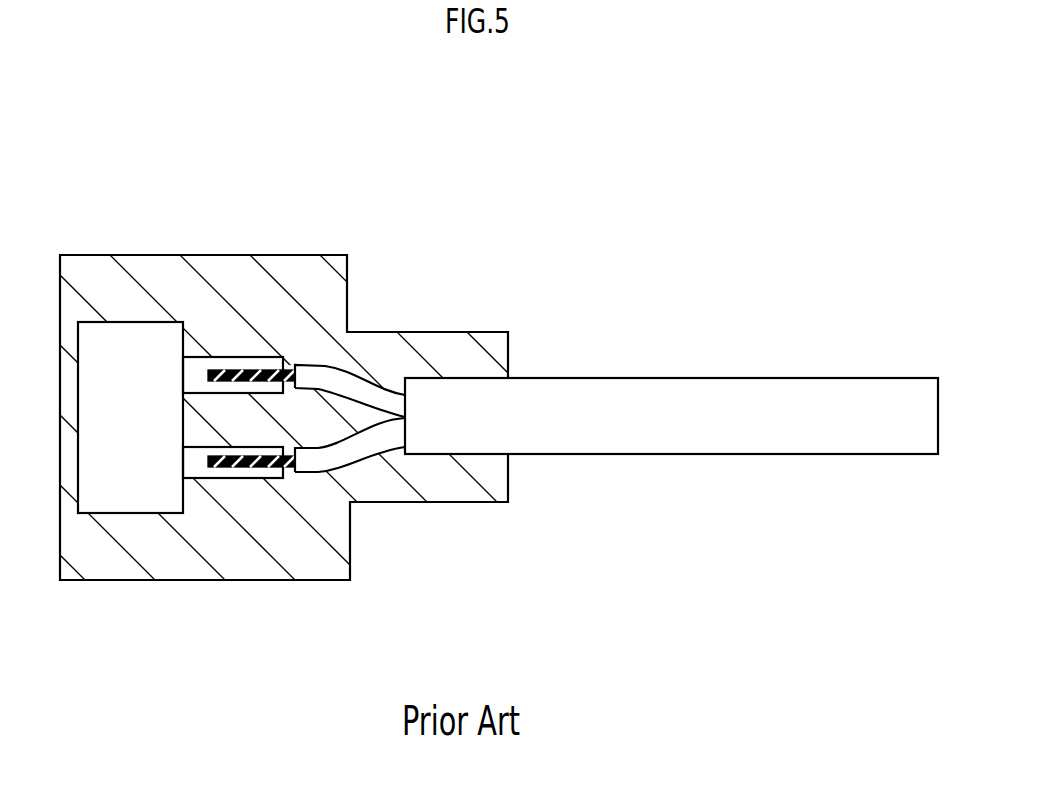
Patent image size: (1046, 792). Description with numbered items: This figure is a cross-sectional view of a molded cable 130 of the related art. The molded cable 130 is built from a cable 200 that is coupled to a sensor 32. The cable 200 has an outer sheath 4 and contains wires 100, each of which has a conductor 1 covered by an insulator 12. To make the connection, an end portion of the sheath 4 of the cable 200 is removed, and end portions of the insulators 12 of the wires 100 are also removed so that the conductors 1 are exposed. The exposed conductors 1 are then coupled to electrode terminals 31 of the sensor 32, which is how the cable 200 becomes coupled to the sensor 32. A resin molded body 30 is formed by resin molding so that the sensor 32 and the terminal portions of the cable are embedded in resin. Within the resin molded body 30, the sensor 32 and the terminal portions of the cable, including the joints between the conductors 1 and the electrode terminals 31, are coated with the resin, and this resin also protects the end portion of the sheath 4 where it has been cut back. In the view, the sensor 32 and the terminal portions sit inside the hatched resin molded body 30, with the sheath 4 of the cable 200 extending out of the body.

The conductor 1 is at (252, 470).
The sheath 4 is at (683, 437).
The insulator 12 is at (338, 383).
The resin molded body 30 is at (155, 555).
The electrode terminal 31 is at (203, 352).
The sensor 32 is at (137, 345).
The wire 100 is at (370, 450).
The molded cable 130 is at (482, 210).
The cable 200 is at (829, 370).